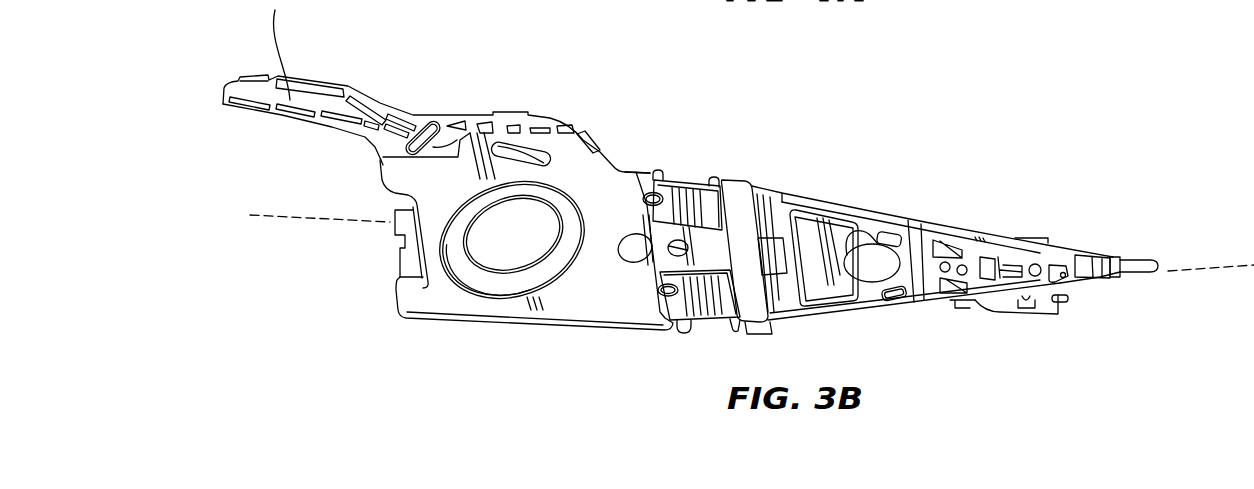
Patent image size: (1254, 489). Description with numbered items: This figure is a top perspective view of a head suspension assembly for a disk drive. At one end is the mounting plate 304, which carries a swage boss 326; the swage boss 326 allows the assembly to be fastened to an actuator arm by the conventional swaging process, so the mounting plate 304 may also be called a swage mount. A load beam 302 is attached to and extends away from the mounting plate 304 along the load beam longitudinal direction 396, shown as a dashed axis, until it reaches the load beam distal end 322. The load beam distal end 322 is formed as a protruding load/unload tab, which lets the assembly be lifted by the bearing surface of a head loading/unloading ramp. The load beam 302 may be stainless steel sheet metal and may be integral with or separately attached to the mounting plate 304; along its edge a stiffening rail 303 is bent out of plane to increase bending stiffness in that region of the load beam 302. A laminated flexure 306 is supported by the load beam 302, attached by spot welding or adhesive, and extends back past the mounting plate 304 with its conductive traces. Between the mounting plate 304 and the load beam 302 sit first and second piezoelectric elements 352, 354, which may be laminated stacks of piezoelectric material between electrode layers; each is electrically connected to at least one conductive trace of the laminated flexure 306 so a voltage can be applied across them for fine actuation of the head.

The load beam 302 is at (913, 238).
The stiffening rail 303 is at (815, 200).
The mounting plate 304 is at (608, 298).
The laminated flexure 306 is at (555, 118).
The load beam distal end 322 is at (1133, 257).
The swage boss 326 is at (497, 272).
The first piezoelectric element 352 is at (700, 182).
The second piezoelectric element 354 is at (720, 297).
The load beam longitudinal direction 396 is at (1242, 277).